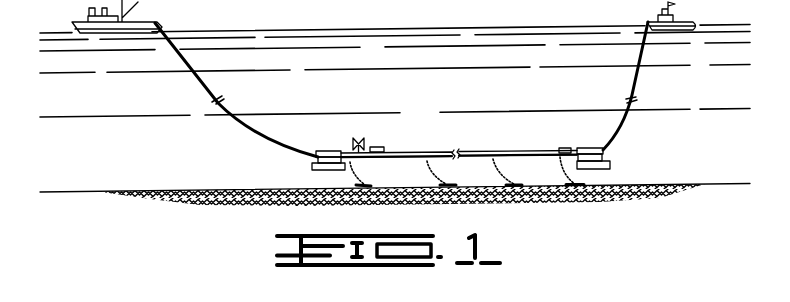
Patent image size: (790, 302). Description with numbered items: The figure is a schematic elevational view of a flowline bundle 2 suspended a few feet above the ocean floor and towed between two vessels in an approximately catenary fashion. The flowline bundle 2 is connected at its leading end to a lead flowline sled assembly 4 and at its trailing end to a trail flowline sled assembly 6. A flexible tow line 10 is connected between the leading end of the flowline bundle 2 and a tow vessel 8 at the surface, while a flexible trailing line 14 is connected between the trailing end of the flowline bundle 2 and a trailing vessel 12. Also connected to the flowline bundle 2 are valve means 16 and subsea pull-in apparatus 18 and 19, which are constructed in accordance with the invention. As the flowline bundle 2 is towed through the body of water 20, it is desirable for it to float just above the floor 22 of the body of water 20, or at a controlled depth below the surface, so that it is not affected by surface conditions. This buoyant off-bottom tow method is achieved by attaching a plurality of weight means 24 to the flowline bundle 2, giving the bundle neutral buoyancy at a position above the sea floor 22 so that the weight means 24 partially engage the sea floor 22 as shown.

The flowline bundle 2 is at (474, 152).
The lead flowline sled assembly 4 is at (325, 144).
The trail flowline sled assembly 6 is at (593, 141).
The tow vessel 8 is at (138, 26).
The flexible tow line 10 is at (247, 130).
The trailing vessel 12 is at (690, 22).
The flexible trailing line 14 is at (637, 84).
The valve means 16 is at (355, 143).
The subsea pull-in apparatus 18 is at (386, 143).
The subsea pull-in apparatus 19 is at (563, 144).
The body of water 20 is at (433, 56).
The floor of the body of water 22 is at (663, 185).
The weight means 24 is at (575, 182).